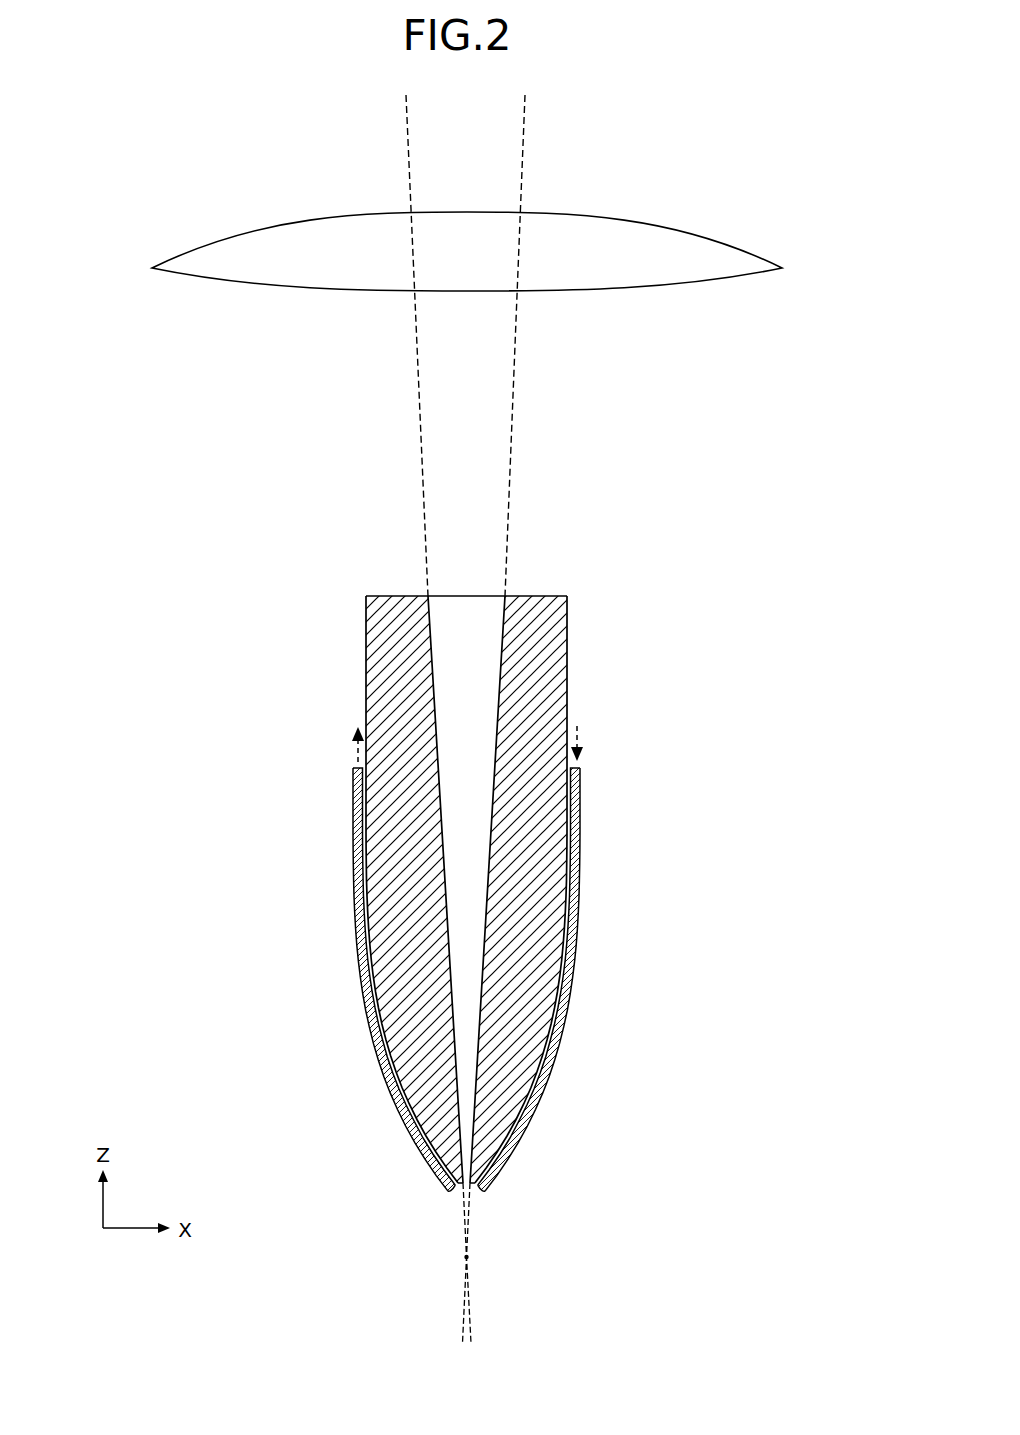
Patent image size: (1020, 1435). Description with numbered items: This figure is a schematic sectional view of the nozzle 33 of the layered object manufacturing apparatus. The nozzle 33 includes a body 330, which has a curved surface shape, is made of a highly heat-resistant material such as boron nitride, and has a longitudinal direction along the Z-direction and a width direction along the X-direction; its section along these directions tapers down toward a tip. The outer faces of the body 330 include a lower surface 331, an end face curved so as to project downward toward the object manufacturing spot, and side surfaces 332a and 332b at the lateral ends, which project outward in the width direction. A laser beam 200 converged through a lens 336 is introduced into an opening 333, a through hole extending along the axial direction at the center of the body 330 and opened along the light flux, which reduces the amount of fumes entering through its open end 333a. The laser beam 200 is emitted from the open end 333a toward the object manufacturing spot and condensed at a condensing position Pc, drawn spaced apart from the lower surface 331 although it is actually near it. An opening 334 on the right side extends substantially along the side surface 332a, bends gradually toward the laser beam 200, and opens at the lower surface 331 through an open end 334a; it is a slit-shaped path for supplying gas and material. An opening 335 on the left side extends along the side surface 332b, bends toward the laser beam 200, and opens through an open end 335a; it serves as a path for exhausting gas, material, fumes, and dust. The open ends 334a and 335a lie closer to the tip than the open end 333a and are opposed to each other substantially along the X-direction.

The nozzle 33 is at (298, 184).
The lens 336 is at (682, 236).
The laser beam 200 is at (519, 355).
The body 330 is at (574, 600).
The opening 333 is at (497, 693).
The open end 333a is at (462, 1195).
The lower surface 331 is at (471, 1195).
The side surface 332a is at (581, 808).
The side surface 332b is at (352, 808).
The opening 334 is at (577, 928).
The open end 334a is at (481, 1197).
The opening 335 is at (356, 928).
The open end 335a is at (452, 1197).
The condensing position Pc is at (470, 1261).